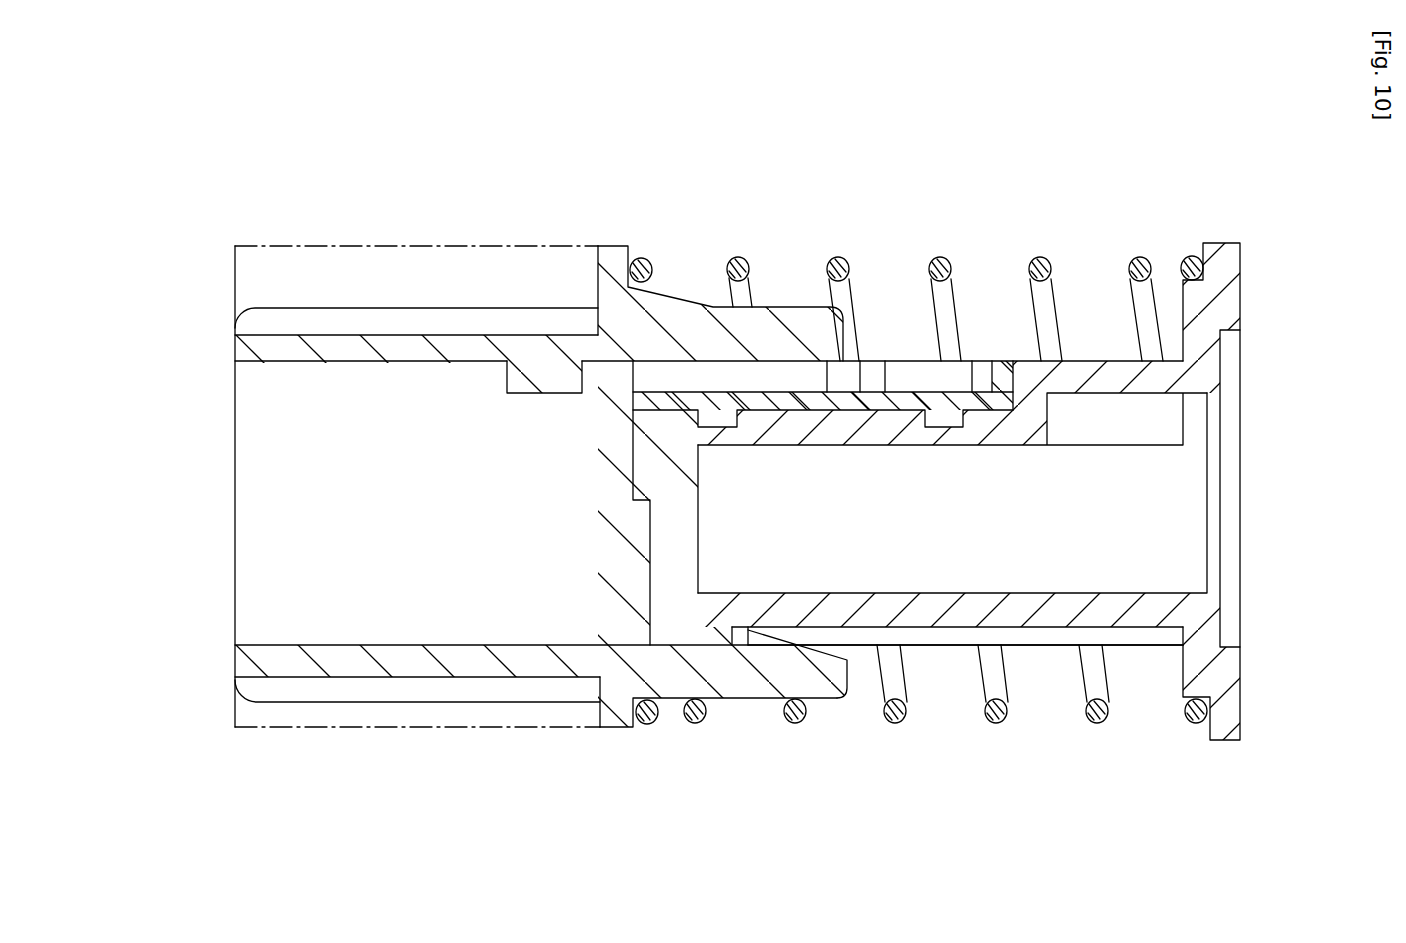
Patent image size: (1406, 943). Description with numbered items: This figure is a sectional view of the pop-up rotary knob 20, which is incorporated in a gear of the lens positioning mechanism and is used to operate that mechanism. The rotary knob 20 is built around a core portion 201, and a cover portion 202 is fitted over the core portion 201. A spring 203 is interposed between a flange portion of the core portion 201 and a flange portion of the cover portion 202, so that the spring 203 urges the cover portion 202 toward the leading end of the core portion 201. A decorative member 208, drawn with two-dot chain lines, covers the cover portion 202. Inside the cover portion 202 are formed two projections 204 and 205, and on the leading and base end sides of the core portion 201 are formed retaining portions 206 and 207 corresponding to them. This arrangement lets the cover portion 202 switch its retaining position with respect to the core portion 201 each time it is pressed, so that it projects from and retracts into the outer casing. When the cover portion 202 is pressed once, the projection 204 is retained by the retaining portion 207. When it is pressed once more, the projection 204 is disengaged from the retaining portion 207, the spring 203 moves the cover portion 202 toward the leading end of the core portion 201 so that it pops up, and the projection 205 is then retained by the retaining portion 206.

The rotary knob 20 is at (196, 240).
The core portion 201 is at (1230, 725).
The cover portion 202 is at (272, 355).
The spring 203 is at (1097, 723).
The projection 204 is at (525, 393).
The projection 205 is at (747, 631).
The retaining portion 206 is at (745, 630).
The retaining portion 207 is at (890, 372).
The decorative member 208 is at (302, 727).